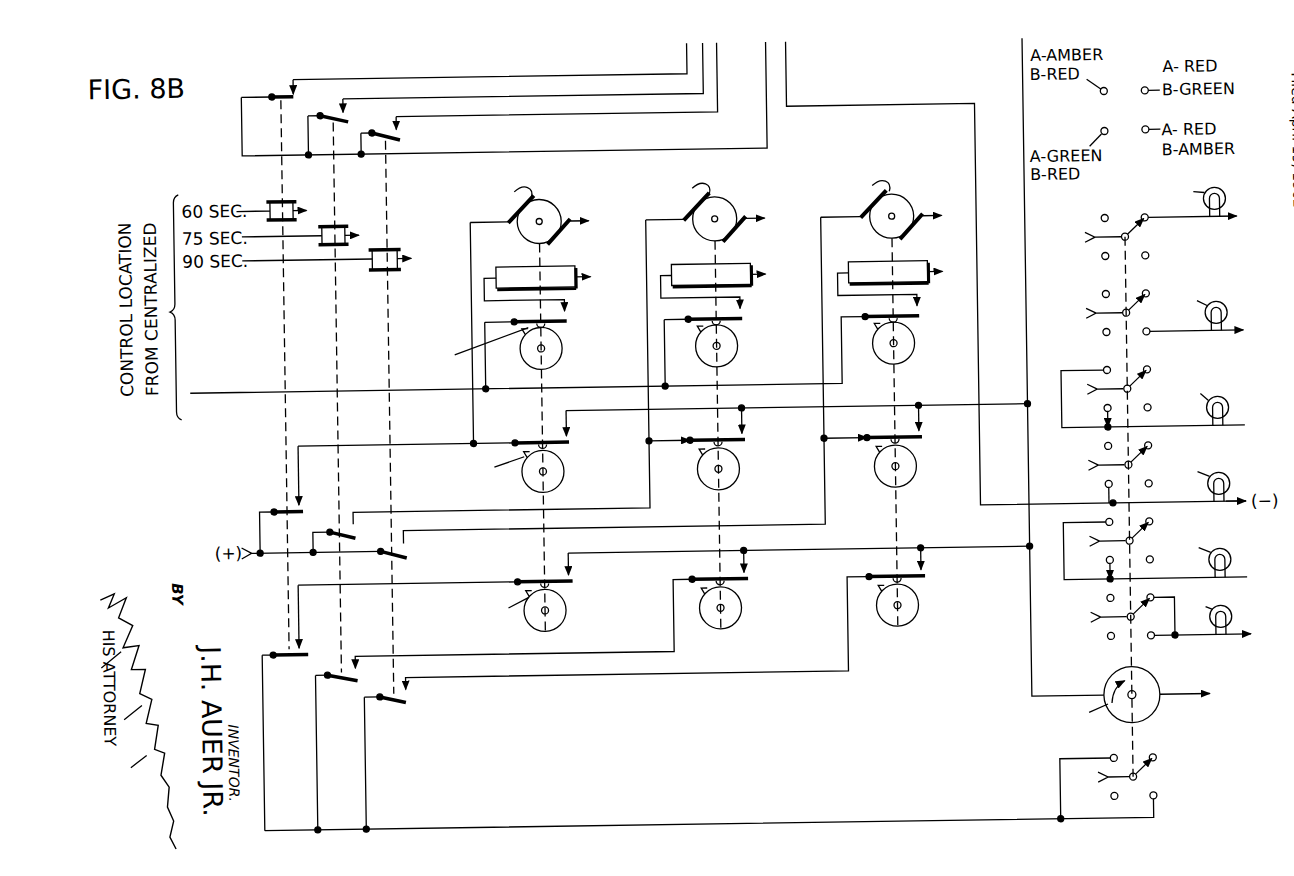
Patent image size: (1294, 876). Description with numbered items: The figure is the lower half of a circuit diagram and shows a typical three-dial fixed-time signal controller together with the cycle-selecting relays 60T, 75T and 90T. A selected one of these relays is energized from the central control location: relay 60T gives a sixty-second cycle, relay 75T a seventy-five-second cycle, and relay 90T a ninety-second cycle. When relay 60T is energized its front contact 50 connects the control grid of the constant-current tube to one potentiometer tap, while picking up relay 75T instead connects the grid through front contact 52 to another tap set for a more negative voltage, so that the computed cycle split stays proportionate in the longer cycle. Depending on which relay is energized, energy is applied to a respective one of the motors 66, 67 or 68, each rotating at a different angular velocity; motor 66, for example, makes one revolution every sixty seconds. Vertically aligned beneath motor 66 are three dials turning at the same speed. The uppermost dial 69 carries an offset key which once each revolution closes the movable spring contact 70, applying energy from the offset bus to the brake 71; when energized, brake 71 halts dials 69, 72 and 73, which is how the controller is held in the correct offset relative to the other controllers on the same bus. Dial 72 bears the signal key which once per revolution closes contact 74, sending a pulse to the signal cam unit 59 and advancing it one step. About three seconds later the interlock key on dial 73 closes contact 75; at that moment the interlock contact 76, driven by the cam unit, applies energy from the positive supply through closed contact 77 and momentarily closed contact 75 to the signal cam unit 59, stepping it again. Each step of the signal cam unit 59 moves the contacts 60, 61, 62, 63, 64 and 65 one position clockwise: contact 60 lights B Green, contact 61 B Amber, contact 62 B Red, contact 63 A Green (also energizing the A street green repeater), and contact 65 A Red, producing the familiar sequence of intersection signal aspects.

The front contact 50 is at (283, 90).
The front contact 52 is at (340, 110).
The signal cam unit 59 is at (1155, 690).
The contact 60 is at (1137, 245).
The contact 61 is at (1137, 321).
The contact 62 is at (1137, 397).
The contact 63 is at (1137, 473).
The contact 64 is at (1137, 549).
The contact 65 is at (1173, 616).
The motor 66 is at (557, 207).
The motor 67 is at (733, 204).
The motor 68 is at (910, 204).
The dial 69 is at (560, 360).
The movable spring contact 70 is at (563, 323).
The brake 71 is at (568, 265).
The dial 72 is at (560, 482).
The dial 73 is at (562, 623).
The contact 74 is at (567, 445).
The contact 75 is at (575, 584).
The interlock contact 76 is at (1138, 791).
The contact 77 is at (286, 708).
The relay 60T is at (285, 196).
The relay 75T is at (338, 222).
The relay 90T is at (393, 246).